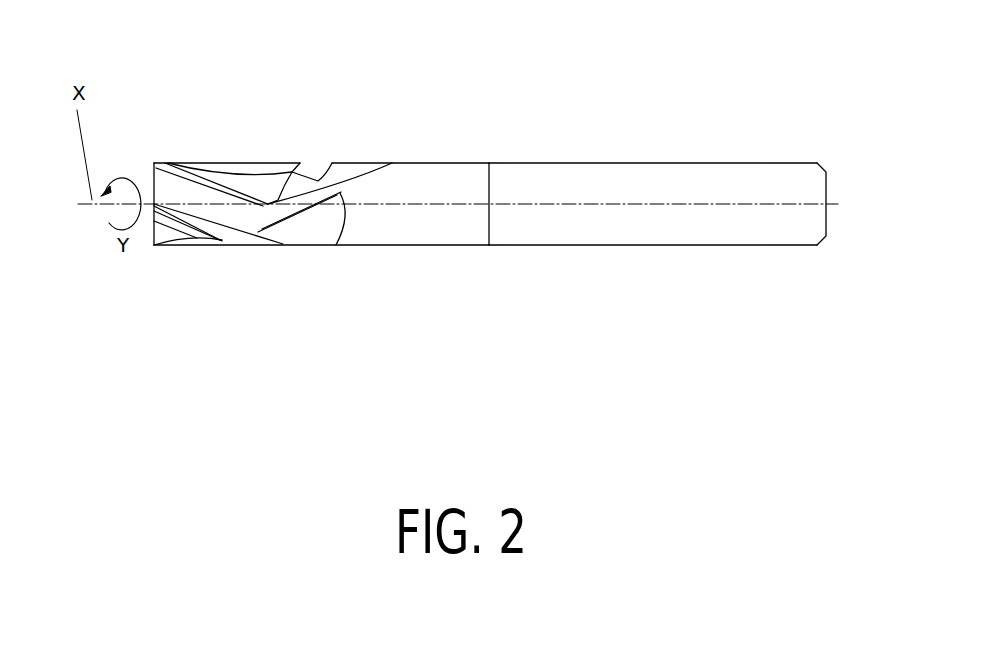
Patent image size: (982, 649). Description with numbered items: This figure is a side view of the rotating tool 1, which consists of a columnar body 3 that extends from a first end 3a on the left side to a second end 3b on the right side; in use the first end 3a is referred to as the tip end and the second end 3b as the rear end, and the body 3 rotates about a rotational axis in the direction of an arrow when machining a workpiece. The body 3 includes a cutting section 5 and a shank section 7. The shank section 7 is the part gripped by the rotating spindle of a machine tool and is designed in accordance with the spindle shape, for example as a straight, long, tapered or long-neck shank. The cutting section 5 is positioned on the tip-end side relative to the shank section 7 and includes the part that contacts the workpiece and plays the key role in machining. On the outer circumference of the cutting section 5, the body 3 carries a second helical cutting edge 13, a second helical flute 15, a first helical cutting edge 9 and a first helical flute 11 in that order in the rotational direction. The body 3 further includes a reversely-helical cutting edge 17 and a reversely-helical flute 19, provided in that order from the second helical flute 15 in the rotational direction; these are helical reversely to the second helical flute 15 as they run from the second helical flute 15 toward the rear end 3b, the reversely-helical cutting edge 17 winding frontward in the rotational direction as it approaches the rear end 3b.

The rotating tool 1 is at (496, 130).
The body 3 is at (823, 385).
The first end 3a is at (152, 162).
The second end 3b is at (826, 196).
The cutting section 5 is at (396, 320).
The shank section 7 is at (823, 322).
The first helical cutting edge 9 is at (168, 160).
The first helical flute 11 is at (233, 178).
The second helical cutting edge 13 is at (193, 240).
The second helical flute 15 is at (220, 241).
The reversely-helical cutting edge 17 is at (310, 207).
The reversely-helical flute 19 is at (268, 216).